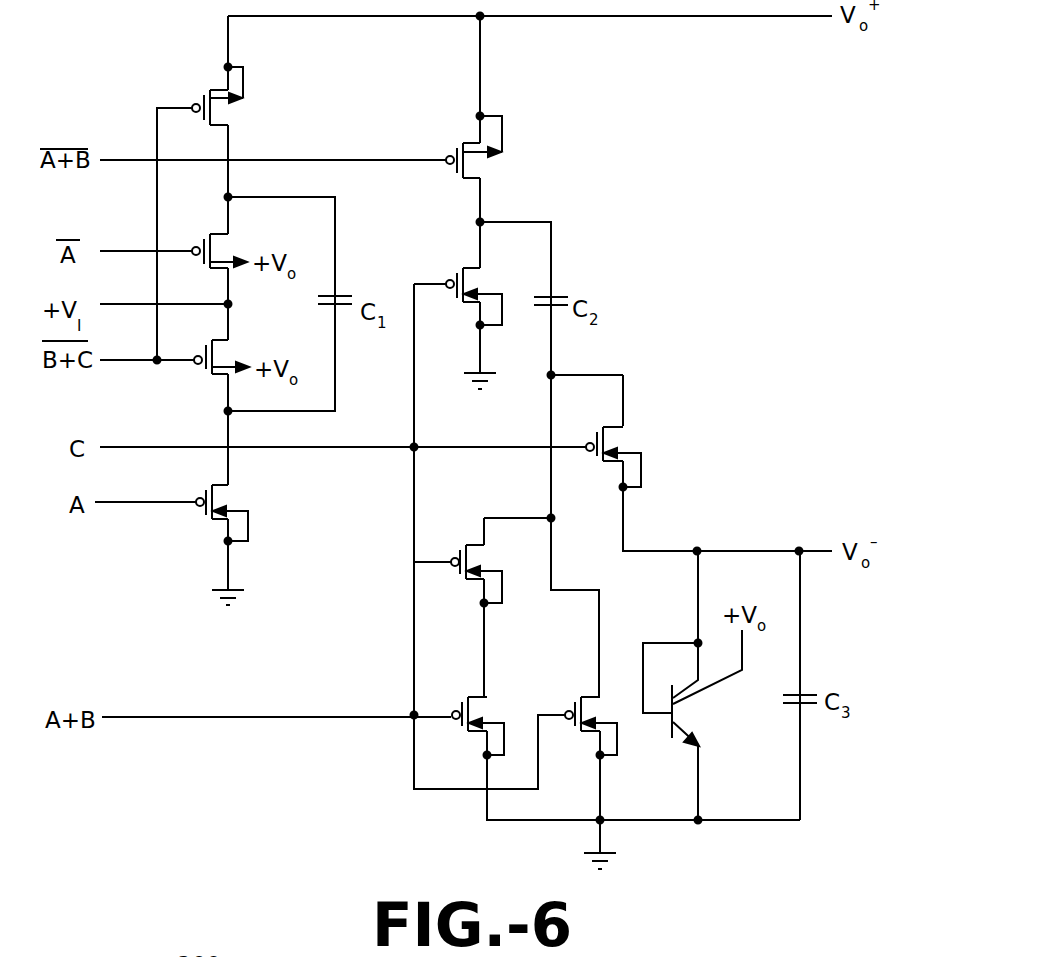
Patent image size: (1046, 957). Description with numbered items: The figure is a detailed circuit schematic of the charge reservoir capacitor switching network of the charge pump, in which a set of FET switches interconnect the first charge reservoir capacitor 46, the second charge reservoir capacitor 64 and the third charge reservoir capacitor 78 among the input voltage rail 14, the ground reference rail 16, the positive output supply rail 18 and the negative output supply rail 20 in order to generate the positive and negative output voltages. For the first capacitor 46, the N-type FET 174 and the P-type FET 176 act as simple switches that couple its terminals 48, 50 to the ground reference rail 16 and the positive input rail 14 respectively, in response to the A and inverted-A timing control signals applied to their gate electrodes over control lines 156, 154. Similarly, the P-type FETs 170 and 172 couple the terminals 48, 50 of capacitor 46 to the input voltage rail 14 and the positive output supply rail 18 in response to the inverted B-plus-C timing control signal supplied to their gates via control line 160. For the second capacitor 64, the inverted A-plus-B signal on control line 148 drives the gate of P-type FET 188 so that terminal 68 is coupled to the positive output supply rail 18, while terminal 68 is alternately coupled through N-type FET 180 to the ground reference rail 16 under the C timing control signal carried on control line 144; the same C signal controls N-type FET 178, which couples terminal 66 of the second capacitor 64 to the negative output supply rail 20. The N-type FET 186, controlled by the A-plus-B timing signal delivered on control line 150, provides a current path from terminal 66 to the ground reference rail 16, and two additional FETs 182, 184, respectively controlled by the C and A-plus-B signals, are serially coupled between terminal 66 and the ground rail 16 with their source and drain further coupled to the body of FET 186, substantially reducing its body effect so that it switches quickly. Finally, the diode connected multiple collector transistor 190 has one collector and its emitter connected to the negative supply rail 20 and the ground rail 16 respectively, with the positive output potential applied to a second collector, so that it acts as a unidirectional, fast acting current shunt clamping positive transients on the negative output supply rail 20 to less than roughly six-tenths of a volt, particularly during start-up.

The input voltage rail 14 is at (147, 306).
The ground reference rail 16 is at (232, 574).
The positive output supply rail 18 is at (710, 17).
The negative output supply rail 20 is at (826, 530).
The charge reservoir capacitor C1 46 is at (343, 296).
The terminal of capacitor C1 48 is at (232, 412).
The second terminal of capacitor C1 50 is at (232, 195).
The charge reservoir capacitor C2 64 is at (561, 290).
The terminal of capacitor C2 66 is at (554, 373).
The terminal of capacitor C2 68 is at (485, 220).
The charge reservoir capacitor C3 78 is at (812, 688).
The control line 144 is at (178, 448).
The control line 148 is at (130, 163).
The control line 150 is at (215, 718).
The control line 154 is at (135, 262).
The control line 156 is at (178, 505).
The control line 160 is at (140, 370).
The P-type FET 170 is at (228, 355).
The P-type FET 172 is at (205, 80).
The N-type FET 174 is at (232, 498).
The P-type FET 176 is at (232, 240).
The N-type FET 178 is at (619, 438).
The N-type FET 180 is at (480, 279).
The FET 182 is at (468, 585).
The FET 184 is at (470, 688).
The N-type FET 186 is at (590, 688).
The P-type FET 188 is at (485, 168).
The diode connected multiple collector transistor 190 is at (690, 722).